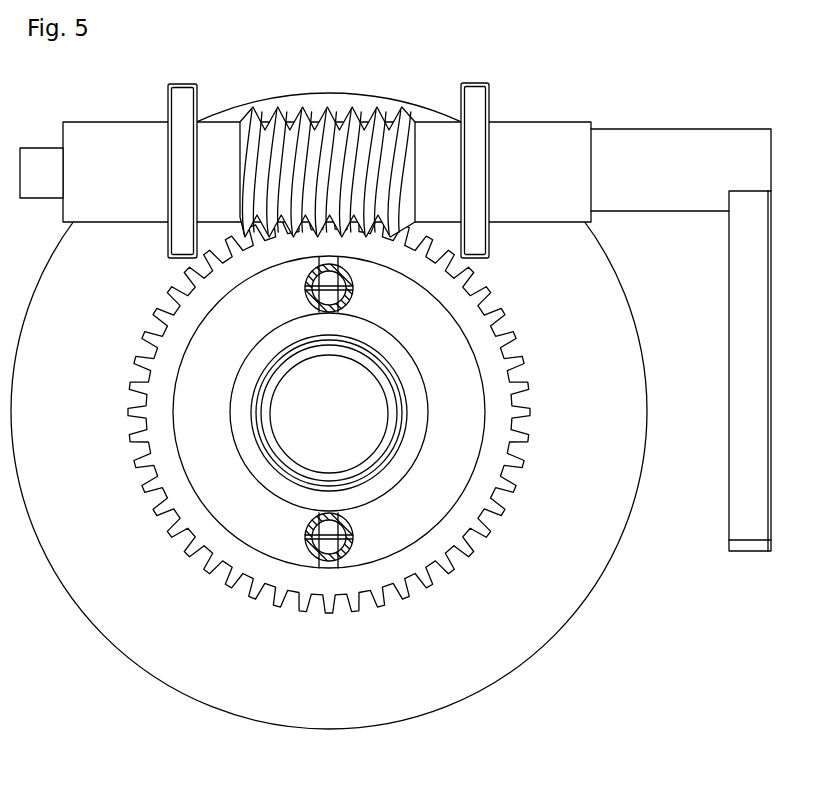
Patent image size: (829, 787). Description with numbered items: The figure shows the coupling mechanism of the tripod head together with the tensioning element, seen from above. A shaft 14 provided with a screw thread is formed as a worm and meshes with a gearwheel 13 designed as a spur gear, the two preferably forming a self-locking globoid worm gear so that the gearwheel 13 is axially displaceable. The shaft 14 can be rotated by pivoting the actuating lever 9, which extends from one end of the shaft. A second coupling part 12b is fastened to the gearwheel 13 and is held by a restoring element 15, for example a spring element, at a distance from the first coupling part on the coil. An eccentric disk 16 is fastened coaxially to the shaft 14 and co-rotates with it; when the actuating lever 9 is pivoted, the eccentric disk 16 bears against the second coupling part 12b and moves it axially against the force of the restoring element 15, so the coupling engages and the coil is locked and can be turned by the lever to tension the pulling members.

The actuating lever 9 is at (728, 510).
The second coupling part 12b is at (200, 682).
The gearwheel 13 is at (186, 548).
The shaft 14 is at (563, 120).
The restoring element 15 is at (353, 550).
The eccentric disk 16 is at (198, 92).